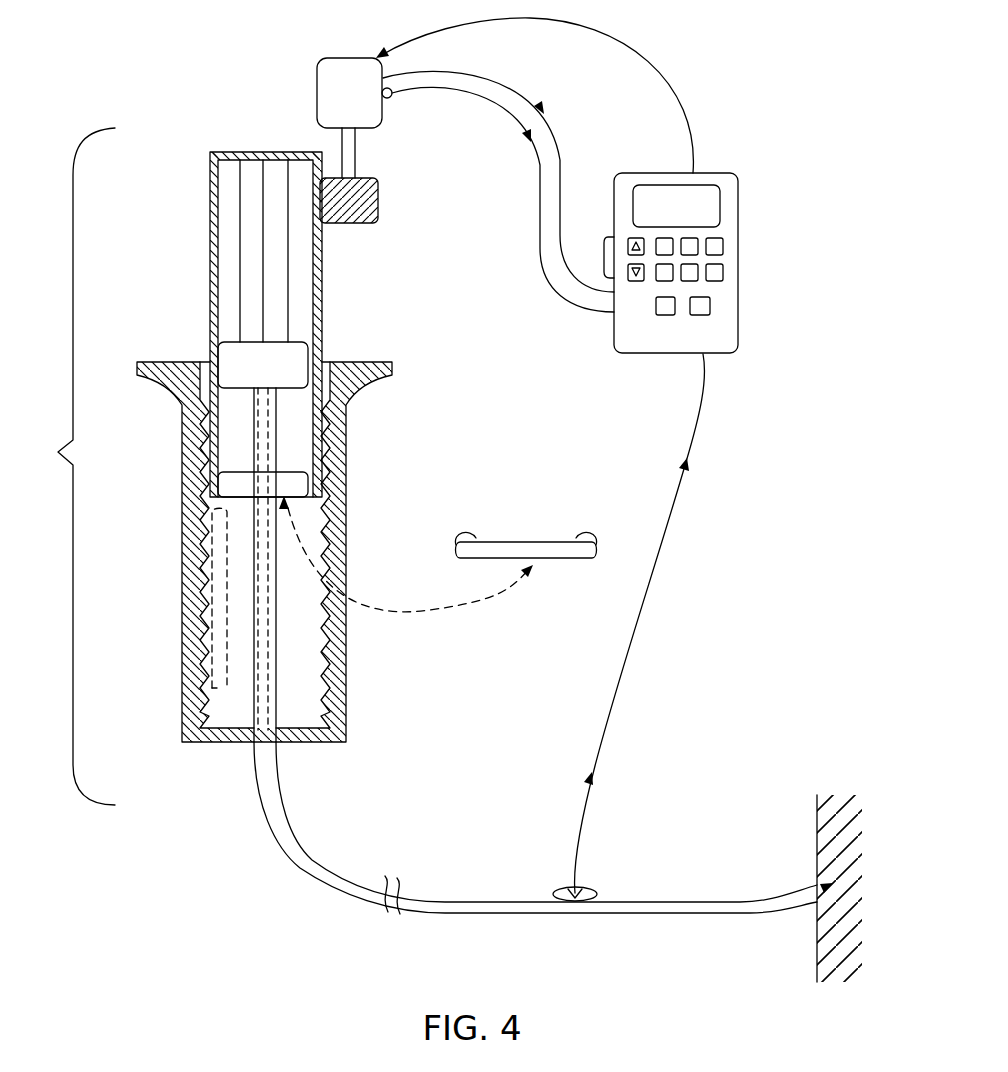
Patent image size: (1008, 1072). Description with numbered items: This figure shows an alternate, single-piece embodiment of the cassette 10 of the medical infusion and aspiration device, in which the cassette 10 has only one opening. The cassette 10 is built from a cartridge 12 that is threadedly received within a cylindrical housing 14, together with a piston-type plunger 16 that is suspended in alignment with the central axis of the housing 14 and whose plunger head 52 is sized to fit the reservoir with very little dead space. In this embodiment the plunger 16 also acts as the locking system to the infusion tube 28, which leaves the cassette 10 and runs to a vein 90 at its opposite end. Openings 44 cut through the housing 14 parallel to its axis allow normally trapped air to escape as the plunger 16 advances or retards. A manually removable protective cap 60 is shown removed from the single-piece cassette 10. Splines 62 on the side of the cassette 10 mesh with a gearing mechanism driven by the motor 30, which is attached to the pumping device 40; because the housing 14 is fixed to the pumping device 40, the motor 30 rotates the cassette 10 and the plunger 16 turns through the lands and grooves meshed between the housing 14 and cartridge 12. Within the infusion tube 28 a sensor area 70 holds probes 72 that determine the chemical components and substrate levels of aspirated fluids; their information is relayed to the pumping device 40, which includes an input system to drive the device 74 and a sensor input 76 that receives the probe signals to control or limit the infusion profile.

The cassette 10 is at (70, 466).
The cartridge 12 is at (208, 264).
The housing 14 is at (182, 522).
The plunger 16 is at (255, 643).
The infusion tube 28 is at (290, 840).
The motor 30 is at (347, 68).
The pumping device 40 is at (736, 252).
The openings 44 is at (212, 598).
The plunger head 52 is at (290, 360).
The protective cap 60 is at (525, 542).
The splines 62 is at (322, 255).
The sensor area 70 is at (592, 888).
The probes 72 is at (565, 888).
The input system to drive the device 74 is at (604, 258).
The sensor input for in-line measurement of substrates 76 is at (705, 355).
The vein 90 is at (824, 833).